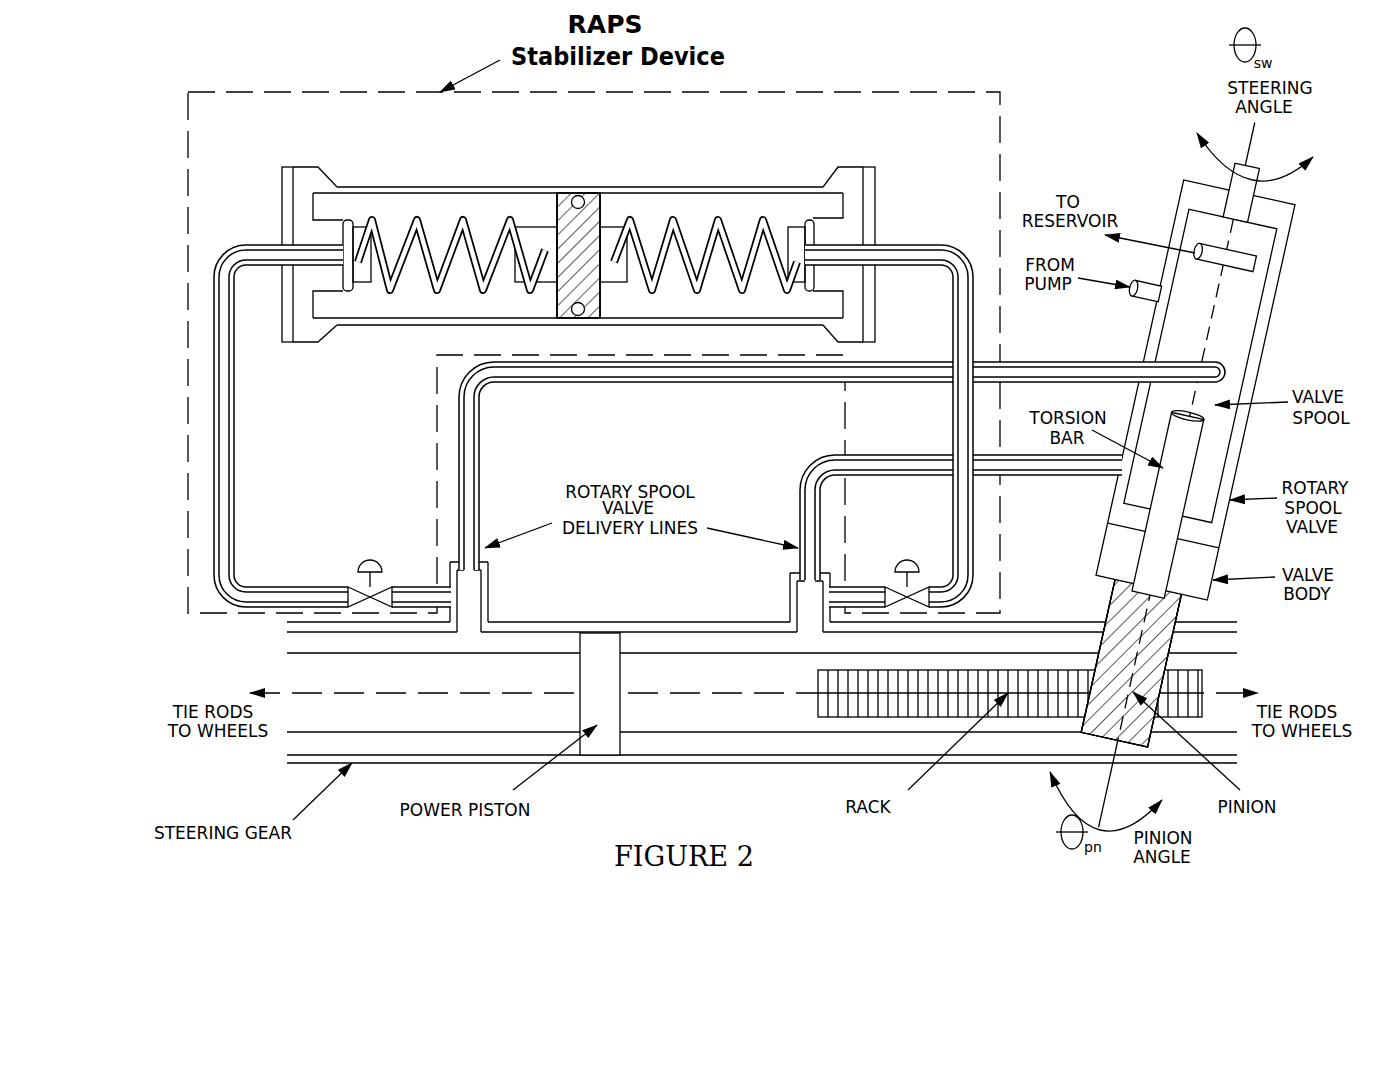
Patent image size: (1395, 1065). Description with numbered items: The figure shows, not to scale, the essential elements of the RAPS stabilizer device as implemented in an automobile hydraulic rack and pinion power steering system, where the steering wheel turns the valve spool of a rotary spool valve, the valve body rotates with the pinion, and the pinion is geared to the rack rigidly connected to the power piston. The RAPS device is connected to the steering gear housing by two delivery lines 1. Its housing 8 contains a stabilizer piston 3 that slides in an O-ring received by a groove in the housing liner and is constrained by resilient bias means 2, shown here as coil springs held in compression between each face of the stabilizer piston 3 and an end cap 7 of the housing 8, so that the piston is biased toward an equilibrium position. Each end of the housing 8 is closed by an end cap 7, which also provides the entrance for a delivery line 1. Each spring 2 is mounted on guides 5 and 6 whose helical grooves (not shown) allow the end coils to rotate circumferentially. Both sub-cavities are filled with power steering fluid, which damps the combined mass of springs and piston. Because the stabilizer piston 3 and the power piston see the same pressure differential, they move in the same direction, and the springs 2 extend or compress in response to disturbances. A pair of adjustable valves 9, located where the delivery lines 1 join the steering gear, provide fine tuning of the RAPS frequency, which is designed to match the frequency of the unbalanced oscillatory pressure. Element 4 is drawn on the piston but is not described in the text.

The delivery lines 1 is at (223, 407).
The resilient bias means 2 is at (380, 232).
The stabilizer piston 3 is at (587, 218).
The piston seal pins 4 is at (578, 315).
The guide 5 is at (533, 262).
The guide 6 is at (362, 272).
The end cap 7 is at (298, 222).
The housing 8 is at (688, 187).
The adjustable valves 9 is at (375, 558).